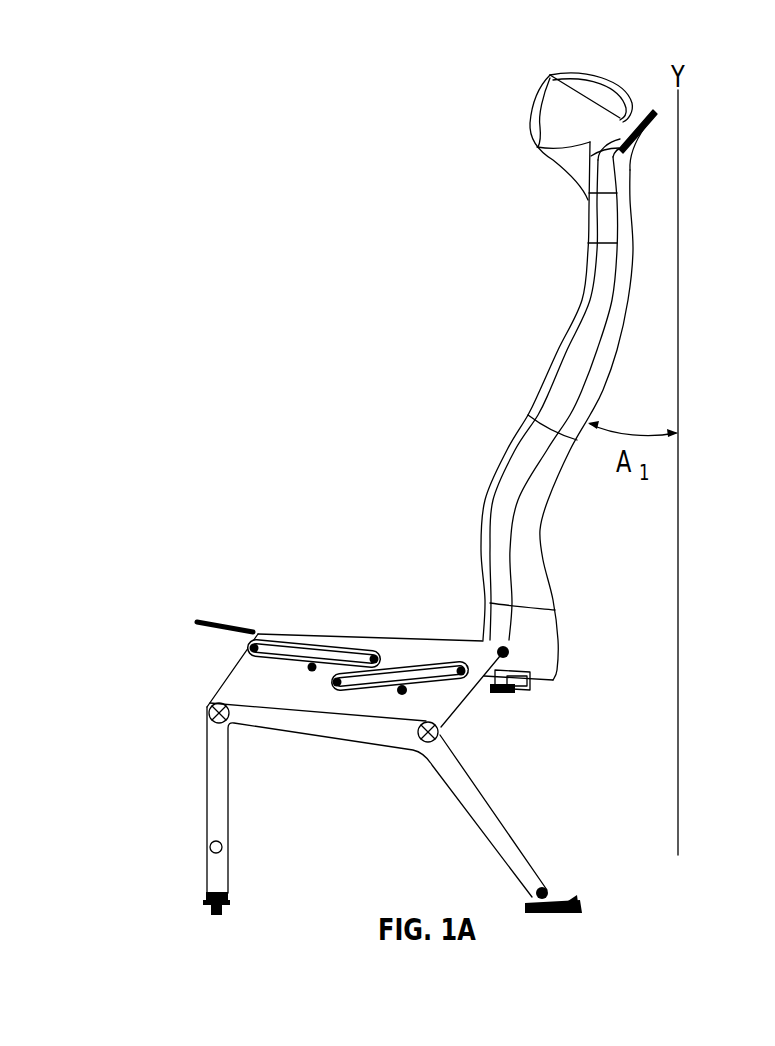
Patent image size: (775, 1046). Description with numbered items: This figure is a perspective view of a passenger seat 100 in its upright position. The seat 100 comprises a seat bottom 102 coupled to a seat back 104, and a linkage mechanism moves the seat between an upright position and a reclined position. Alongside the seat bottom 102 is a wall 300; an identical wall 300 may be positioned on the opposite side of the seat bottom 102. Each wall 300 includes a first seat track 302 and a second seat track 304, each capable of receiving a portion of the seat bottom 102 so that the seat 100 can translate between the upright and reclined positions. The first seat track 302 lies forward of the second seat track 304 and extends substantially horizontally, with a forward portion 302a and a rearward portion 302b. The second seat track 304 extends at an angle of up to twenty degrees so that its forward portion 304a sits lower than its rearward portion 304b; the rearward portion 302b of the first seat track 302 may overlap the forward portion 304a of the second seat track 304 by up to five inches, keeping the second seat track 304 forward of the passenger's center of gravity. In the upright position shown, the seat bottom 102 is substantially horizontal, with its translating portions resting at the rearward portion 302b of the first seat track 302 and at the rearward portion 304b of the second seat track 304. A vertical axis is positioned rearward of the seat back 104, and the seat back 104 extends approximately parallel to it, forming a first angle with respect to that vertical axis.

The seat 100 is at (298, 233).
The seat bottom 102 is at (213, 625).
The seat back 104 is at (630, 220).
The wall 300 is at (188, 679).
The first seat track 302 is at (309, 634).
The forward portion of the first seat track 302a is at (256, 643).
The rearward portion of the first seat track 302b is at (358, 645).
The second seat track 304 is at (403, 702).
The forward portion of the second seat track 304a is at (368, 692).
The rearward portion of the second seat track 304b is at (460, 662).